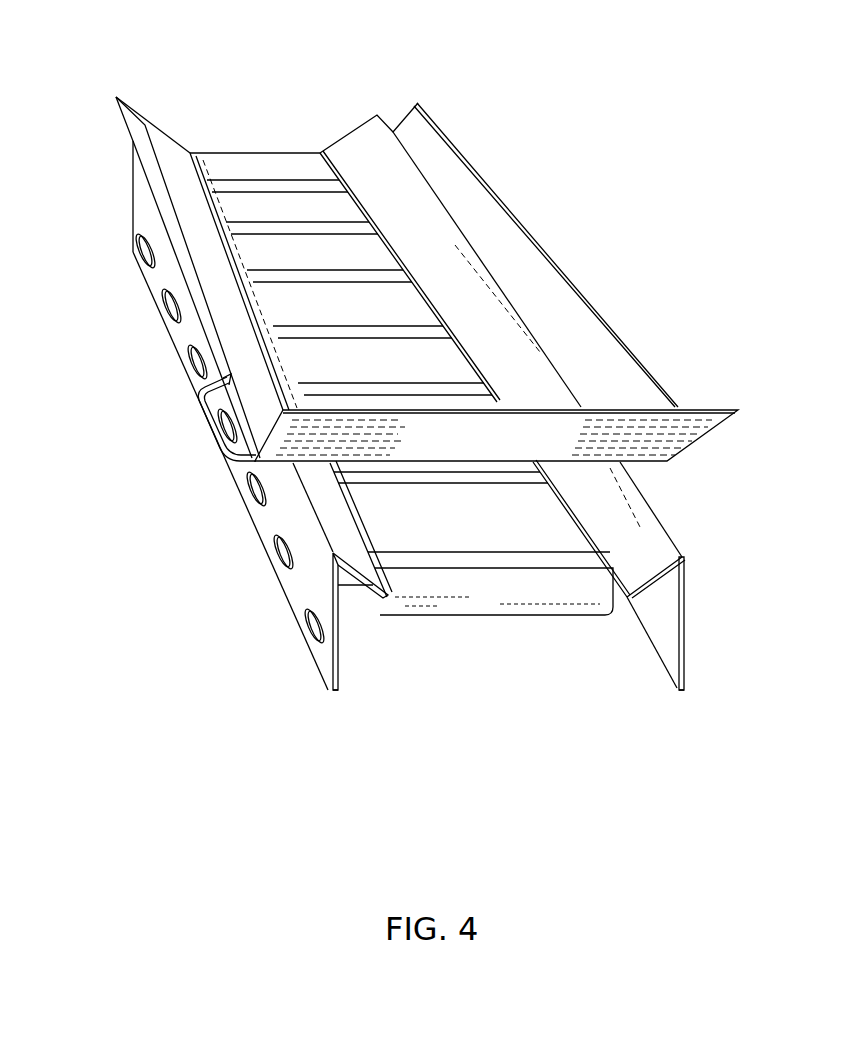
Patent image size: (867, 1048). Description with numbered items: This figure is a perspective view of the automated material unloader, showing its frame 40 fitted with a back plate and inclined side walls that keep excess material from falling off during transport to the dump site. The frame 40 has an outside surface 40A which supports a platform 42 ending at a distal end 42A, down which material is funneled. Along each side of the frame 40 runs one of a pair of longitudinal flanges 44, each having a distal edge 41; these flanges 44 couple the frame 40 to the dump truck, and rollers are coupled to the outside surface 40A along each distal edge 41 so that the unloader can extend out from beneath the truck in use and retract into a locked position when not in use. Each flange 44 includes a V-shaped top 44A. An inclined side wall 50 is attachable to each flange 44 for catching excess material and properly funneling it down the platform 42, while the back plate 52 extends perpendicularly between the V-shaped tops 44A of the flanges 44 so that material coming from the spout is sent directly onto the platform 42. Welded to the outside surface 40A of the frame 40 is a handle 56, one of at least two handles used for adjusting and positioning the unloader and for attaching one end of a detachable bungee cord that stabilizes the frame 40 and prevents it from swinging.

The frame 40 is at (145, 527).
The outside surface 40A is at (143, 187).
The distal edge 41 is at (297, 587).
The platform 42 is at (395, 300).
The distal end 42A is at (578, 593).
The longitudinal flange 44 is at (680, 693).
The V-shaped top 44A is at (340, 587).
The inclined side wall 50 is at (413, 122).
The back plate 52 is at (738, 408).
The handle 56 is at (213, 427).